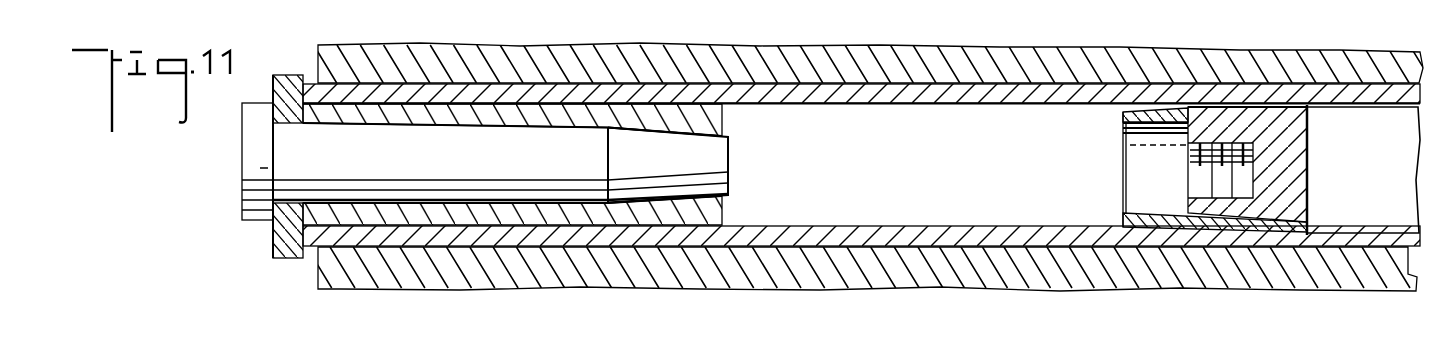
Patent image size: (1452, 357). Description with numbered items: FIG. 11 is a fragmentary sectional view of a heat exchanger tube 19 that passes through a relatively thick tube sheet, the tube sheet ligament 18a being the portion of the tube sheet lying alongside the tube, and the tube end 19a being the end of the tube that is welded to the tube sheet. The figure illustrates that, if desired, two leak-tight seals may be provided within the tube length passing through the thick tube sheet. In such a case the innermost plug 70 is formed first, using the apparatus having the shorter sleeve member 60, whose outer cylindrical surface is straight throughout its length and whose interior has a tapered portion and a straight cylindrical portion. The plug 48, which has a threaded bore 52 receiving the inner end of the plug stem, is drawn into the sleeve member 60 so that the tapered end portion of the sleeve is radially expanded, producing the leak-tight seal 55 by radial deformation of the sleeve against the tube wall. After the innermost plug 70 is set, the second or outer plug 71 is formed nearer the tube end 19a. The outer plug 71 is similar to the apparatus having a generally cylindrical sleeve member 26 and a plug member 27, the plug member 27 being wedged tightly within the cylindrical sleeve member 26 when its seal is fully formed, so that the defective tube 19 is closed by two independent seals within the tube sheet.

The tube sheet ligament 18a is at (287, 277).
The heat exchanger tube 19 is at (853, 85).
The tube end 19a is at (313, 81).
The cylindrical sleeve member 26 is at (712, 117).
The plug member 27 is at (500, 167).
The plug 48 is at (1297, 153).
The threaded bore 52 is at (1200, 195).
The leak-tight seal 55 is at (1287, 232).
The sleeve member 60 is at (1125, 117).
The innermost plug 70 is at (1256, 108).
The outer plug 71 is at (673, 101).